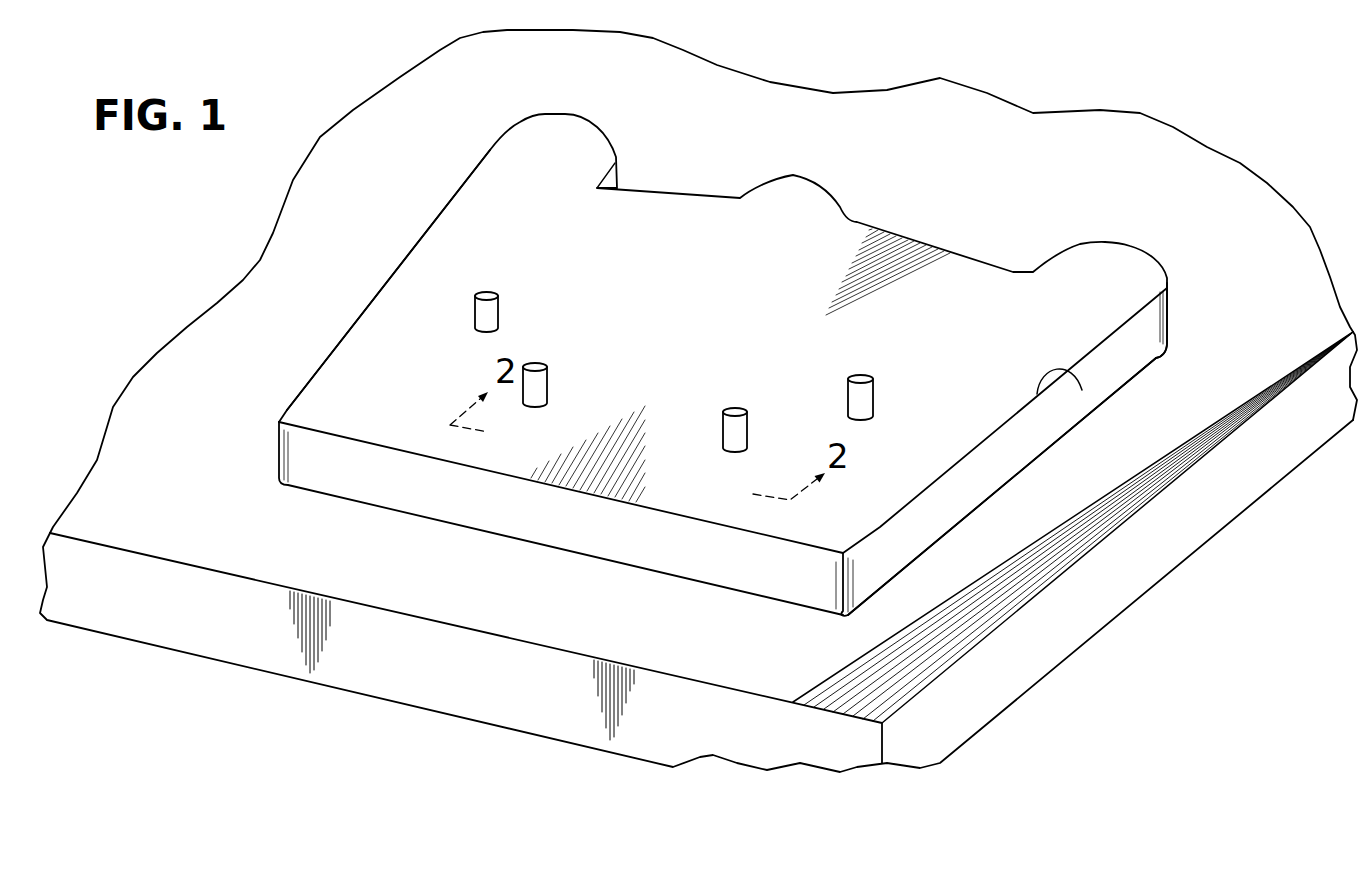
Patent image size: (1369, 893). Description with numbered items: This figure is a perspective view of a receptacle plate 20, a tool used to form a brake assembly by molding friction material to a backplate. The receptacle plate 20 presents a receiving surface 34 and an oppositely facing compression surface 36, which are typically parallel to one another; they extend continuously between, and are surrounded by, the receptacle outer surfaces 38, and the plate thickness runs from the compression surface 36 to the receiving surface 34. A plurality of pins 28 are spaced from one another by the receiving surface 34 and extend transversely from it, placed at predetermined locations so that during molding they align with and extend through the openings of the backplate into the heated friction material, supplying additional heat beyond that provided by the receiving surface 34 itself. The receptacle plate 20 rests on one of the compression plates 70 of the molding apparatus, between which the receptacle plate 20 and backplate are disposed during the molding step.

The compression plate 70 is at (1005, 130).
The receptacle plate 20 is at (1094, 226).
The pin 28 is at (498, 312).
The receiving surface 34 is at (1082, 390).
The compression surface 36 is at (1143, 373).
The receptacle outer surface 38 is at (430, 220).